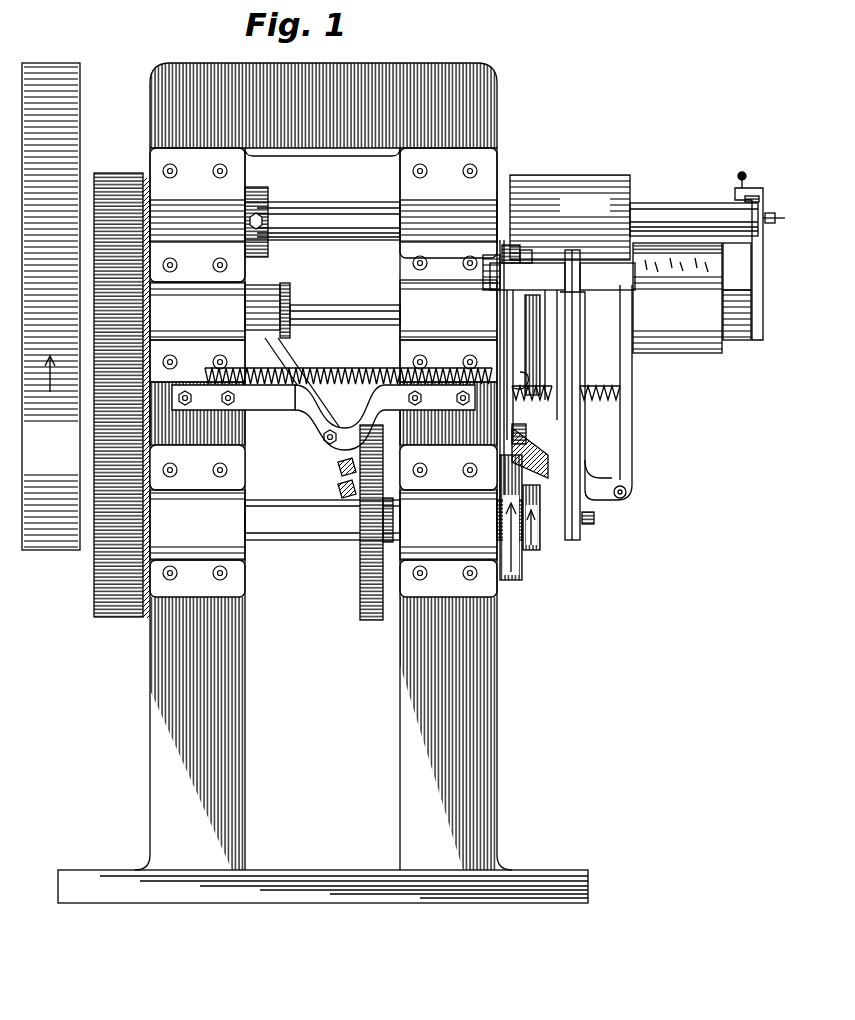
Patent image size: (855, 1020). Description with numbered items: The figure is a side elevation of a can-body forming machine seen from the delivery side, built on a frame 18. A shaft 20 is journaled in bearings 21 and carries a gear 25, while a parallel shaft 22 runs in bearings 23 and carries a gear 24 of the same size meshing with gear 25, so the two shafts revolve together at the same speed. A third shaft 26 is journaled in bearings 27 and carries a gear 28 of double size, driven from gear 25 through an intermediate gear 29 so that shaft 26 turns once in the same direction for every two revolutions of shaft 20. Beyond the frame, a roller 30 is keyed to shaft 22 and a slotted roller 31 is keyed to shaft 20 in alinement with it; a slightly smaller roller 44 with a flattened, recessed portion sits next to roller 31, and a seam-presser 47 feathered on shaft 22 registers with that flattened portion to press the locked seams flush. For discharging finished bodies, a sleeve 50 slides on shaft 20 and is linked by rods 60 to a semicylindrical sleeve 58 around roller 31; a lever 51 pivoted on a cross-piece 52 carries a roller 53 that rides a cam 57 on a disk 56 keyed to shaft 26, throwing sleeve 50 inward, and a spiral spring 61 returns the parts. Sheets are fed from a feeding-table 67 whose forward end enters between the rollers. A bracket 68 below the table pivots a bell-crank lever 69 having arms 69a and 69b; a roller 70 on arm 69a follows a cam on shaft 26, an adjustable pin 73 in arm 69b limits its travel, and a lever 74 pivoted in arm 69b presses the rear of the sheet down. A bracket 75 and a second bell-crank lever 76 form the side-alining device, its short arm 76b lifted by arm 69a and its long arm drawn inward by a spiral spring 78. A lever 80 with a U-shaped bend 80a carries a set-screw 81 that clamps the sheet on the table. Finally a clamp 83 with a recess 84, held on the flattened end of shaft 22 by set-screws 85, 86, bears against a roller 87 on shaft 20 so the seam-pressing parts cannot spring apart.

The frame 18 is at (388, 82).
The shaft 20 is at (322, 300).
The bearings 21 is at (323, 310).
The shaft 22 is at (318, 206).
The bearings 23 is at (323, 215).
The gear 24 is at (110, 172).
The gear 25 is at (112, 305).
The shaft 26 is at (383, 520).
The bearings 27 is at (323, 468).
The gear 28 is at (112, 553).
The intermediate gear 29 is at (112, 385).
The roller 30 is at (570, 217).
The roller 31 is at (605, 294).
The roller 44 is at (698, 340).
The seam-presser 47 is at (737, 266).
The sleeve 50 is at (262, 300).
The lever 51 is at (318, 402).
The cross-piece 52 is at (295, 428).
The roller 53 is at (340, 470).
The disk 56 is at (375, 620).
The cam 57 is at (360, 548).
The semicylindrical sleeve 58 is at (578, 356).
The rods 60 is at (340, 308).
The spiral spring 61 is at (312, 378).
The feeding-table 67 is at (527, 276).
The bracket 68 is at (590, 470).
The bell-crank lever 69 is at (592, 524).
The arm 69a is at (528, 434).
The arm 69b is at (600, 312).
The roller 70 is at (512, 445).
The pin 73 is at (580, 275).
The lever 74 is at (528, 330).
The bracket 75 is at (550, 462).
The bell-crank lever 76 is at (630, 410).
The short arm 76b is at (580, 505).
The spiral spring 78 is at (566, 409).
The lever 80 is at (530, 378).
The U-shaped bend 80a is at (510, 250).
The set-screw 81 is at (528, 252).
The clamp 83 is at (763, 265).
The recess 84 is at (760, 212).
The set-screw 85 is at (785, 218).
The set-screw 86 is at (744, 174).
The roller 87 is at (740, 320).